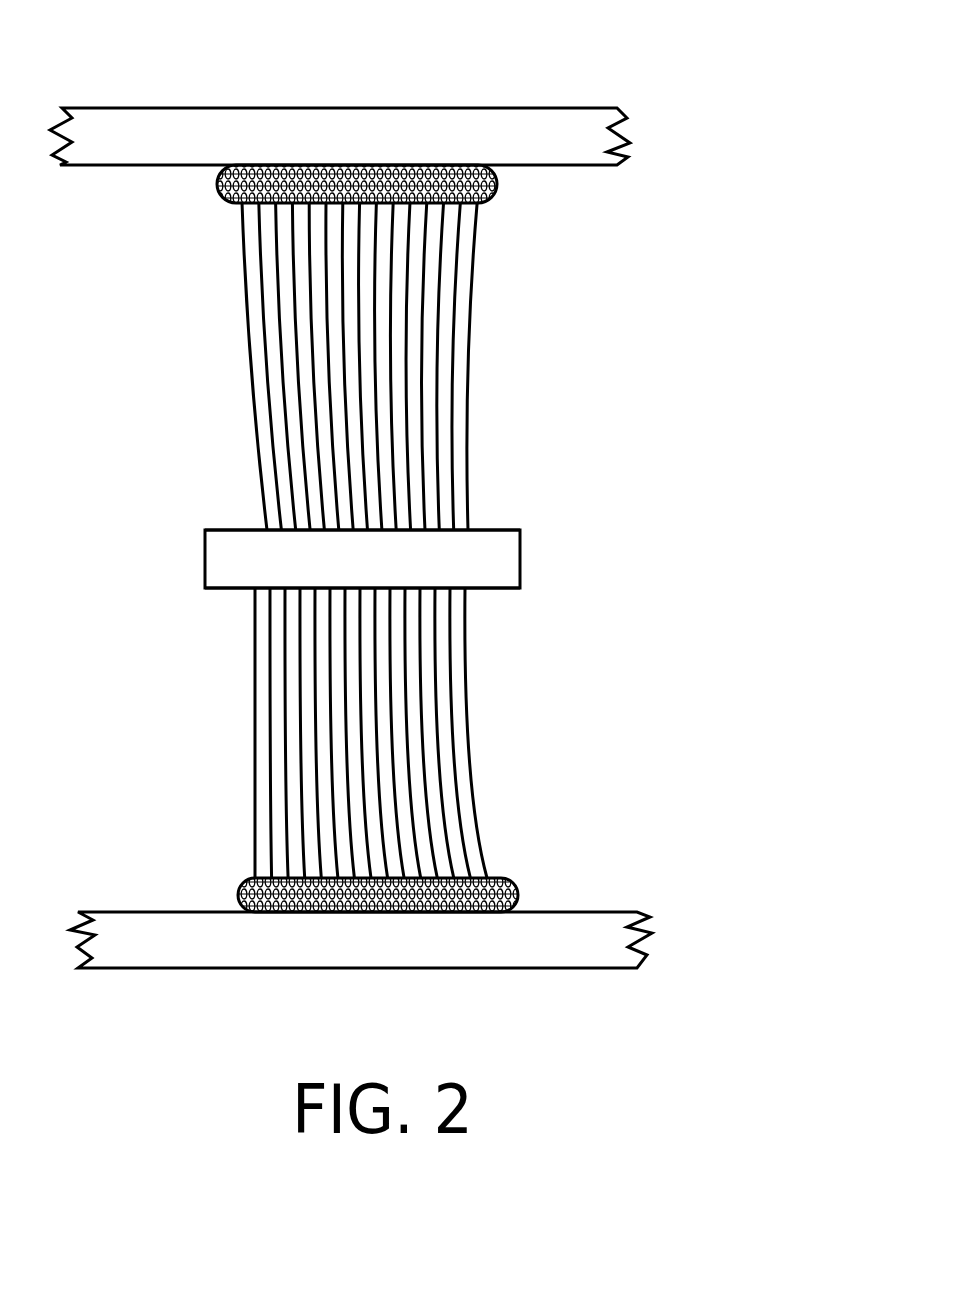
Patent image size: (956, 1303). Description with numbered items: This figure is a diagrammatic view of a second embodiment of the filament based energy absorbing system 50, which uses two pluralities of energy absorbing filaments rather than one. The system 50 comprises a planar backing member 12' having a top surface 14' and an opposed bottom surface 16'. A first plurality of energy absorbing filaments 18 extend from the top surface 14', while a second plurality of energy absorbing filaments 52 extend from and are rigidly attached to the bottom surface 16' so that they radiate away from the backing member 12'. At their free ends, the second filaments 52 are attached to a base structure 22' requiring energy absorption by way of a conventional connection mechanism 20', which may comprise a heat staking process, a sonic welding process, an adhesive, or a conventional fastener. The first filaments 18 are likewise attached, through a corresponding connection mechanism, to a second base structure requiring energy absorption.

The first plurality of energy absorbing filaments 18 is at (472, 286).
The filament based energy absorbing system 50 is at (647, 285).
The top surface 14' is at (382, 458).
The backing member 12' is at (427, 552).
The bottom surface 16' is at (398, 627).
The second plurality of energy absorbing filaments 52 is at (487, 860).
The connection mechanism 20' is at (339, 852).
The base structure 22' is at (417, 964).